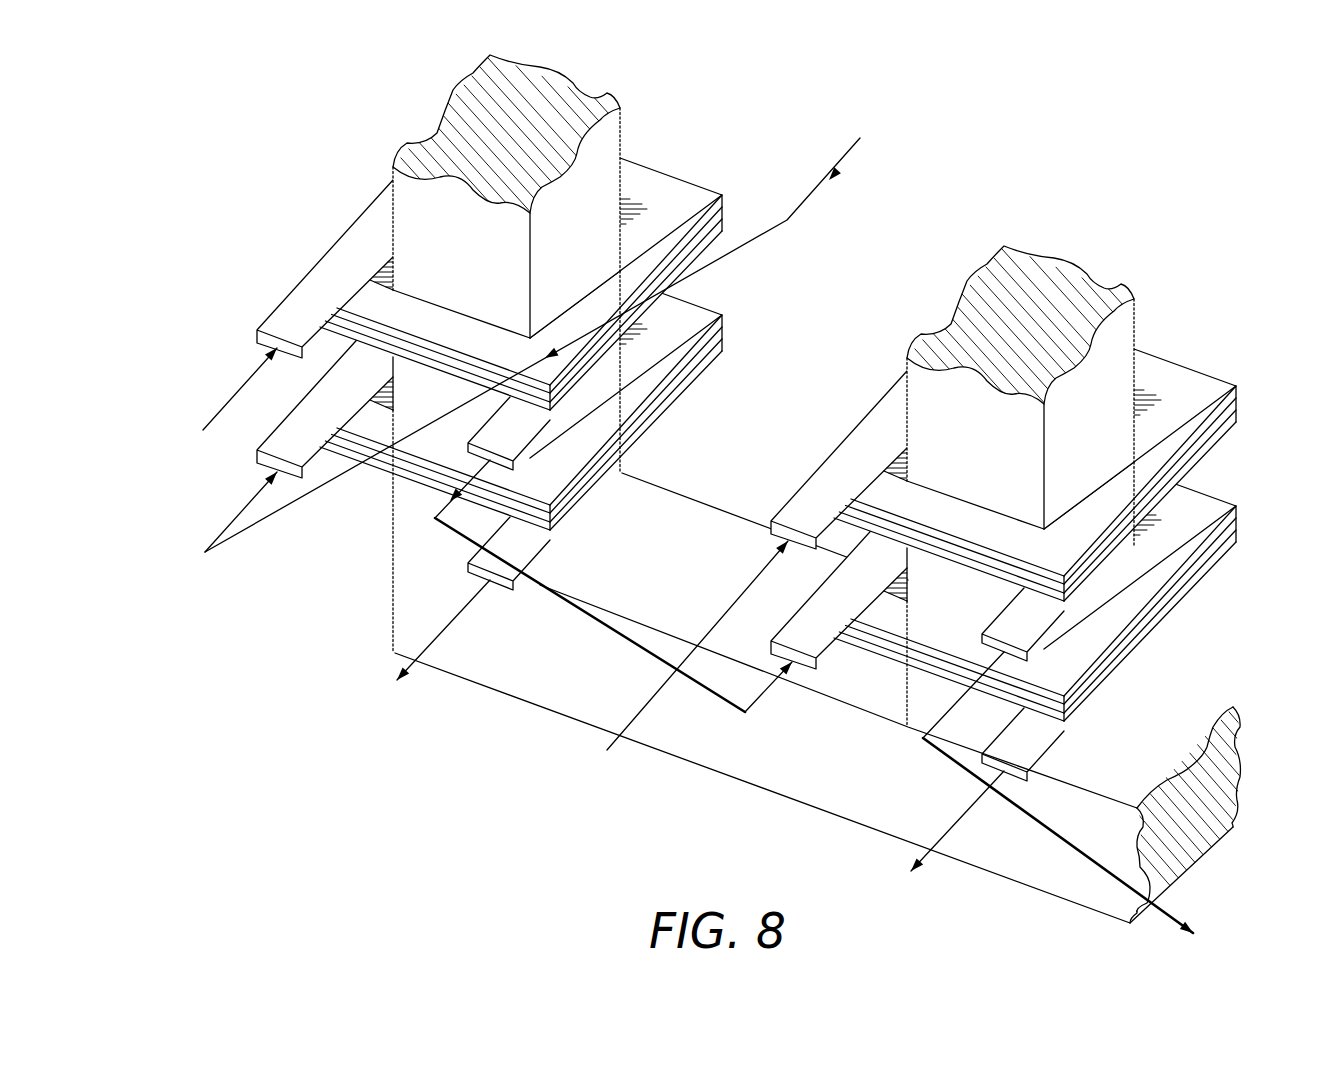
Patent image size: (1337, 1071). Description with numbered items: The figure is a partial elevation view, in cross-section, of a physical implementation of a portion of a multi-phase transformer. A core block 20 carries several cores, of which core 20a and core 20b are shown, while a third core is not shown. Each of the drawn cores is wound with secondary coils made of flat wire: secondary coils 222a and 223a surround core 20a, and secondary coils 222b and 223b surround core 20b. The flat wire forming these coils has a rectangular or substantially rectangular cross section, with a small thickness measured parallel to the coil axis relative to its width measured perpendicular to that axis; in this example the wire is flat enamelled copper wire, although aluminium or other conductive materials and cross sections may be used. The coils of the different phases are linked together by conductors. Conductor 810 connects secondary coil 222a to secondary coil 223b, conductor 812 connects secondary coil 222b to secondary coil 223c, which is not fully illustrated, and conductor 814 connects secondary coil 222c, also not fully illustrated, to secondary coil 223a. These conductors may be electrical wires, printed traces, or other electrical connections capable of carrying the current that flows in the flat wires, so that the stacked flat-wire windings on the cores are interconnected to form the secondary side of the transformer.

The core block 20 is at (513, 697).
The core 20a is at (578, 82).
The core 20b is at (1092, 270).
The secondary coil 222a is at (337, 243).
The secondary coil 222b is at (1224, 378).
The secondary coil 222c is at (862, 142).
The secondary coil 223a is at (712, 310).
The secondary coil 223b is at (1220, 497).
The secondary coil 223c is at (1190, 918).
The conductor 810 is at (630, 647).
The conductor 812 is at (1051, 833).
The conductor 814 is at (306, 499).